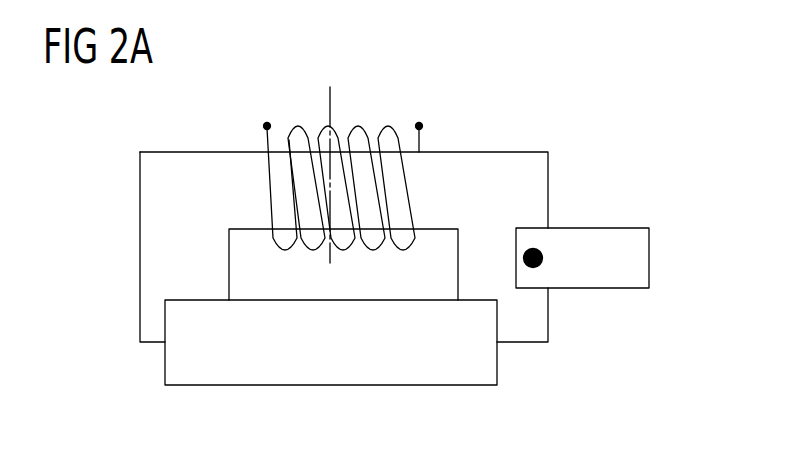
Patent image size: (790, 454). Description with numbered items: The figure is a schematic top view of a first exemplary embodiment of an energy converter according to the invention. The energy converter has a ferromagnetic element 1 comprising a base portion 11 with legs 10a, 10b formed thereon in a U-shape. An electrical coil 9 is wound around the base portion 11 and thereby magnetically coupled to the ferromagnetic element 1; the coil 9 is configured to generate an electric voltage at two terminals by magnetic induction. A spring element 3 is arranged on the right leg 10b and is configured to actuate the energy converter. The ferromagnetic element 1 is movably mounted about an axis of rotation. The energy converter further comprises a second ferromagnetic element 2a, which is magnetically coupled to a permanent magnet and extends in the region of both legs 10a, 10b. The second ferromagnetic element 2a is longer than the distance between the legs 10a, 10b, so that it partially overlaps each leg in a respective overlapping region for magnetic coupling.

The ferromagnetic element 1 is at (91, 152).
The electrical coil 9 is at (266, 174).
The base portion 11 is at (538, 173).
The leg 10a is at (149, 278).
The leg 10b is at (538, 323).
The spring element 3 is at (640, 258).
The second ferromagnetic element 2a is at (172, 358).